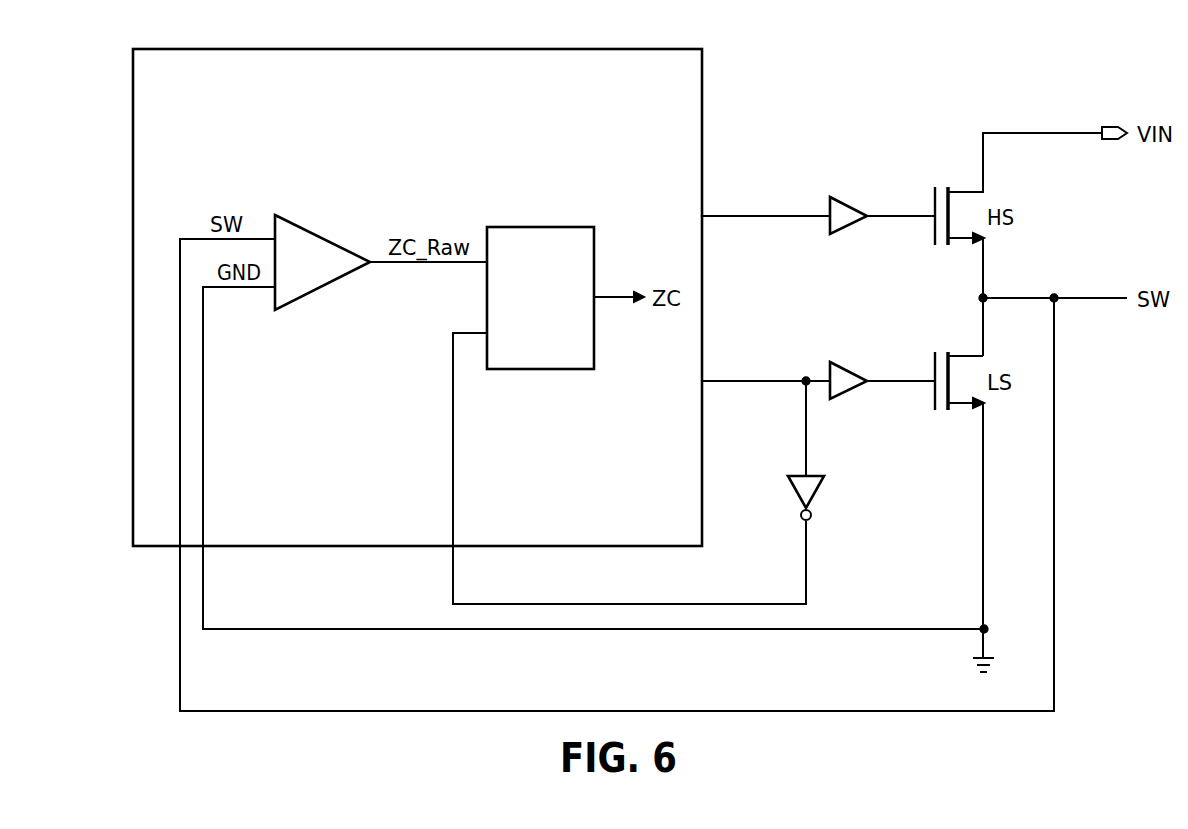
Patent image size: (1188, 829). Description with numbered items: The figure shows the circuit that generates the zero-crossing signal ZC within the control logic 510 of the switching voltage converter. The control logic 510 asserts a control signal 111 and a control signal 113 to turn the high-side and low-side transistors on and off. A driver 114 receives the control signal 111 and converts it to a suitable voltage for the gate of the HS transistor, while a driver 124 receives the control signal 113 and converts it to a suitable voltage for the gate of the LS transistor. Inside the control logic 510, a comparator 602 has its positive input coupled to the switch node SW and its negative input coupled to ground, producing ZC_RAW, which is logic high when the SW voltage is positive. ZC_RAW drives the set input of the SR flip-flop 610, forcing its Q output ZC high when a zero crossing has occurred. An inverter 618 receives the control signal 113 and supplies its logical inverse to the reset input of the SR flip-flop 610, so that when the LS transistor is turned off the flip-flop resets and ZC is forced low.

The control logic 510 is at (440, 168).
The comparator 602 is at (322, 238).
The SR flip-flop 610 is at (542, 227).
The control signal 111 is at (747, 216).
The driver 114 is at (848, 207).
The control signal 113 is at (745, 381).
The driver 124 is at (850, 392).
The inverter 618 is at (815, 492).